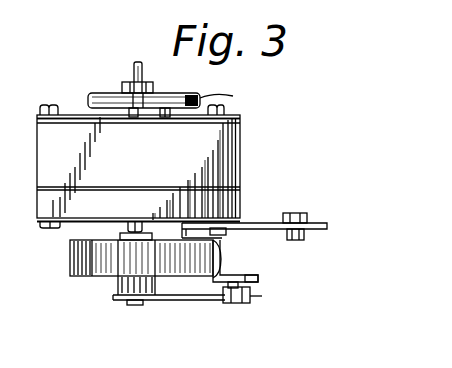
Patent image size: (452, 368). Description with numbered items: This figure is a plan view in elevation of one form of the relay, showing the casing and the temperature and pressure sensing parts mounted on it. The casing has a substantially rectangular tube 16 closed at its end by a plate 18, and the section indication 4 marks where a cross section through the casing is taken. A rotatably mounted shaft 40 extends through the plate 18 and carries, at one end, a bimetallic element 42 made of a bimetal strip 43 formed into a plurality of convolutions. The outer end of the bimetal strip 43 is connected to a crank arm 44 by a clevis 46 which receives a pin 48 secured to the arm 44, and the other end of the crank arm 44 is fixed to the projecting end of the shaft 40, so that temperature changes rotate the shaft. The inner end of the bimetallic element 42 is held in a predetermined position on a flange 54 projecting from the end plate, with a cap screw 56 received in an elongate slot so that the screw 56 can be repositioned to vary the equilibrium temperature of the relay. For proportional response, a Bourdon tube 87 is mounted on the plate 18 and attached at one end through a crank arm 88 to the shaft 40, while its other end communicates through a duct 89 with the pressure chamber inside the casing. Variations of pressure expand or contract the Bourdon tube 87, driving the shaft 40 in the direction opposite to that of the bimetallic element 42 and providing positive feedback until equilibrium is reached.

The rectangular tube 16 is at (53, 138).
The plate 18 is at (82, 117).
The rotatably mounted shaft 40 is at (137, 61).
The crank arm 88 is at (132, 84).
The duct 89 is at (173, 95).
The Bourdon tube 87 is at (201, 97).
The section line 4- 4 is at (24, 157).
The flange 54 is at (316, 222).
The cap screw 56 is at (293, 242).
The bimetal strip 43 is at (85, 274).
The bimetallic element 42 is at (154, 305).
The clevis 46 is at (258, 279).
The crank arm 44 is at (210, 302).
The pin 48 is at (254, 302).